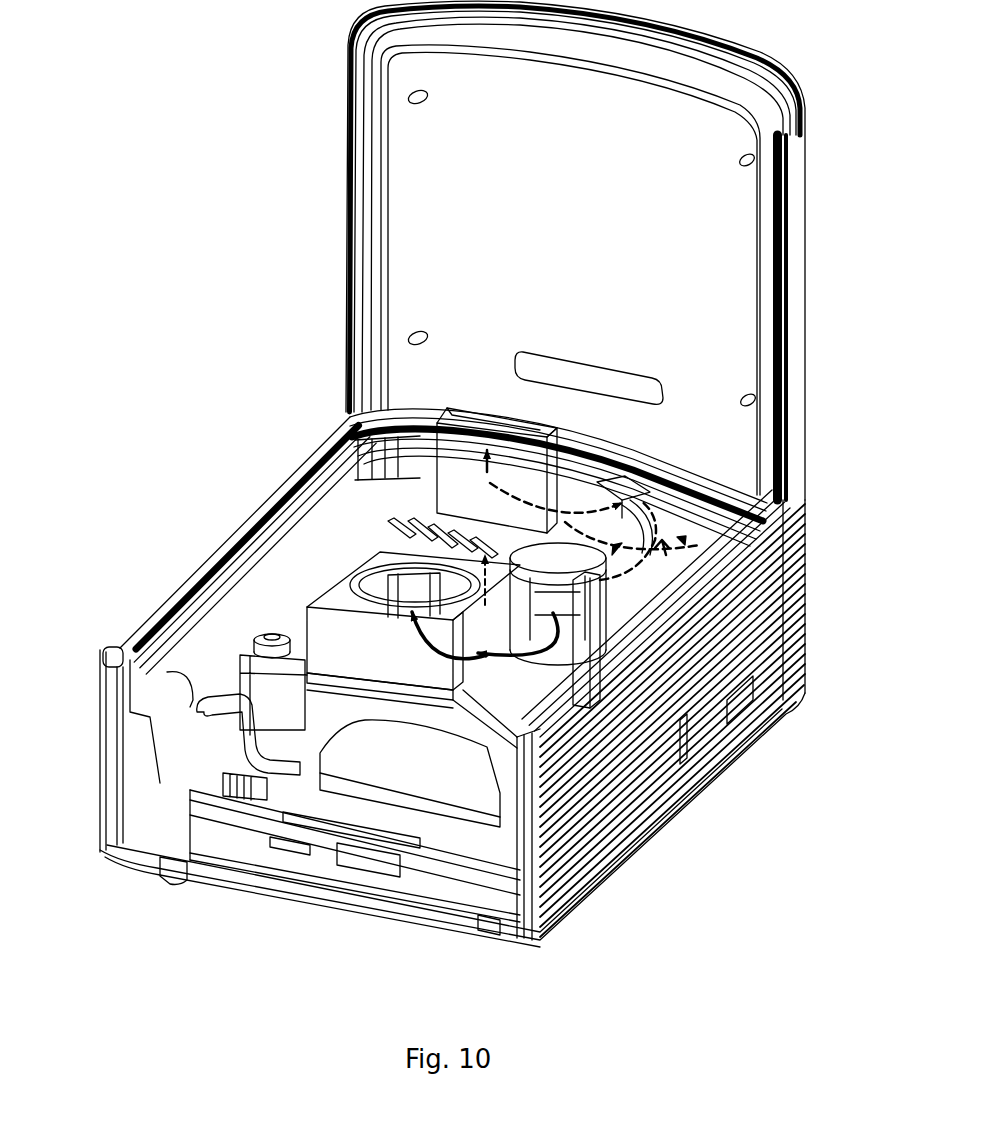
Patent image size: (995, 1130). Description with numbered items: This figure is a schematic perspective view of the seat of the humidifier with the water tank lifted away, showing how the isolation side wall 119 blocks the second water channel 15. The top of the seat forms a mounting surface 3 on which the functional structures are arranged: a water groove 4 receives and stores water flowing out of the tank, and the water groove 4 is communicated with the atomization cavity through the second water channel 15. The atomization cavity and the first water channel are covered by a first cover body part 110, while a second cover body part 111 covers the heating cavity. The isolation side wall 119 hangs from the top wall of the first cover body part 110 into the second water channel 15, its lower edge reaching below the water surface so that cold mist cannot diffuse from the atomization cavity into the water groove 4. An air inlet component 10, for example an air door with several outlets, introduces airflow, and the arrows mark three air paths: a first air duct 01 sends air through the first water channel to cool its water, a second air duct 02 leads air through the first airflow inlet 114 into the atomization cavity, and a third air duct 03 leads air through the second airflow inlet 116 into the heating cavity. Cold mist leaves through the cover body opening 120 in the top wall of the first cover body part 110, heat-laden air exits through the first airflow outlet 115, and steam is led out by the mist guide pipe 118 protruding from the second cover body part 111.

The mounting surface 3 is at (272, 593).
The first air duct 01 is at (283, 628).
The second air duct 02 is at (437, 657).
The third air duct 03 is at (697, 547).
The water groove 4 is at (313, 810).
The air inlet component 10 is at (592, 624).
The second water channel 15 is at (320, 755).
The first cover body part 110 is at (328, 588).
The second cover body part 111 is at (763, 732).
The first airflow inlet 114 is at (475, 686).
The first airflow outlet 115 is at (385, 525).
The second airflow inlet 116 is at (636, 490).
The mist guide pipe 118 is at (400, 425).
The isolation side wall 119 is at (387, 718).
The cover body opening 120 is at (350, 578).